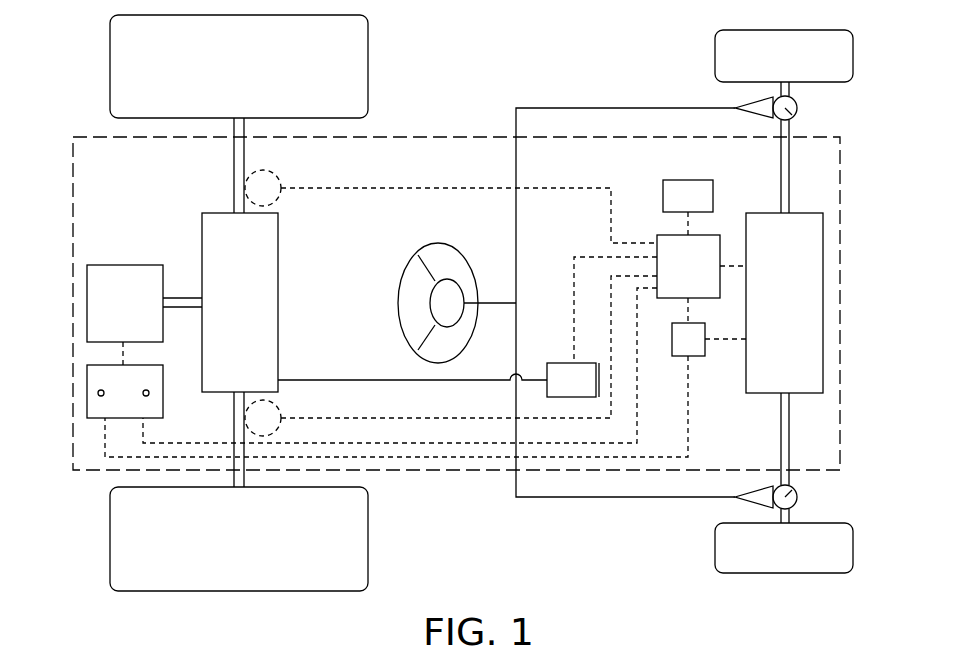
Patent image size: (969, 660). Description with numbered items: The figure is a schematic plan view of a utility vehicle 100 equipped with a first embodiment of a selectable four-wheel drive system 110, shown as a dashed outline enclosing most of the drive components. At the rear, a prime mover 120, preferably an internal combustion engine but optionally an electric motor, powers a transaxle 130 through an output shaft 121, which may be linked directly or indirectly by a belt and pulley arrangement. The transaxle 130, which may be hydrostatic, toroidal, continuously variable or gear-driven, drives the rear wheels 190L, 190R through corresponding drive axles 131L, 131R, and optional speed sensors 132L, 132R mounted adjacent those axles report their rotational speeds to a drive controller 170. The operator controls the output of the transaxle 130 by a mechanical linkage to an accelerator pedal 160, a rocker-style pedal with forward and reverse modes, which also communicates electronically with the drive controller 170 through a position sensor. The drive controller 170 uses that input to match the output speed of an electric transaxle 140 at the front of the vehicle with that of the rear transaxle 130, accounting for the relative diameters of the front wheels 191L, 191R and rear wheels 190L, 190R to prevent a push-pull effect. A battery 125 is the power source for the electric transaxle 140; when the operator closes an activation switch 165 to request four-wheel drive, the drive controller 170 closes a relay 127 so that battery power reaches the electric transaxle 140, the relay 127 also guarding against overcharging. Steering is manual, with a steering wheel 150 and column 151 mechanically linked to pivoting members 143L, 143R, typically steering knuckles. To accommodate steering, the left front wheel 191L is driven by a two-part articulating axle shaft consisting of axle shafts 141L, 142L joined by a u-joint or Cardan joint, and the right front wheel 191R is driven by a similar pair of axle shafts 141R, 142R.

The utility vehicle 100 is at (470, 86).
The selectable four-wheel drive system 110 is at (138, 177).
The prime mover 120 is at (87, 303).
The output shaft 121 is at (183, 293).
The battery 125 is at (87, 393).
The relay 127 is at (697, 357).
The transaxle 130 is at (279, 303).
The drive axle 131L is at (246, 152).
The drive axle 131R is at (246, 477).
The speed sensor 132L is at (276, 199).
The speed sensor 132R is at (277, 405).
The electric transaxle 140 is at (824, 313).
The axle shaft 141L is at (790, 165).
The axle shaft 141R is at (790, 440).
The axle shaft 142L is at (791, 89).
The axle shaft 142R is at (791, 517).
The pivoting member 143L is at (795, 117).
The pivoting member 143R is at (792, 493).
The steering wheel 150 is at (404, 278).
The column 151 is at (498, 300).
The accelerator pedal 160 is at (552, 362).
The activation switch 165 is at (690, 180).
The drive controller 170 is at (663, 235).
The rear wheel 190L is at (270, 80).
The rear wheel 190R is at (272, 550).
The front wheel 191L is at (815, 68).
The front wheel 191R is at (818, 560).